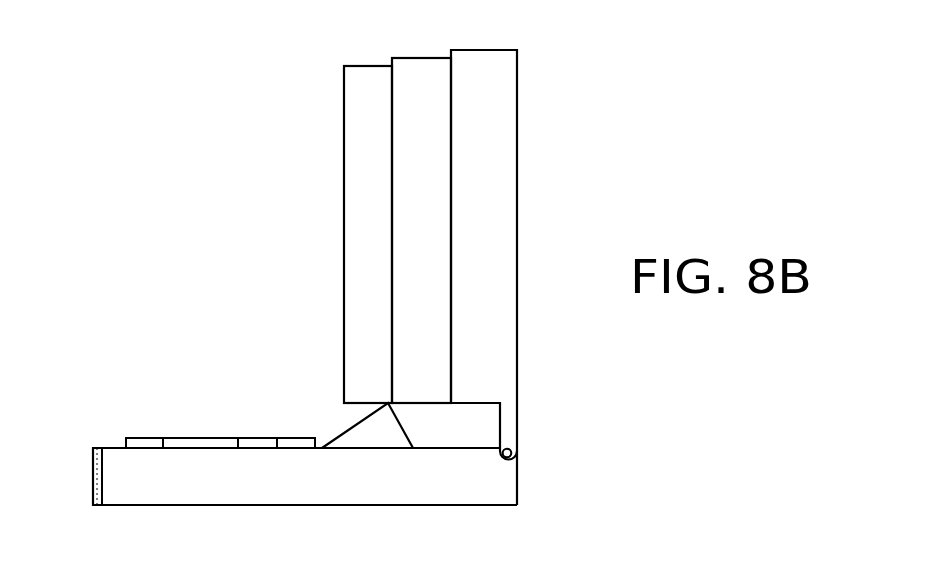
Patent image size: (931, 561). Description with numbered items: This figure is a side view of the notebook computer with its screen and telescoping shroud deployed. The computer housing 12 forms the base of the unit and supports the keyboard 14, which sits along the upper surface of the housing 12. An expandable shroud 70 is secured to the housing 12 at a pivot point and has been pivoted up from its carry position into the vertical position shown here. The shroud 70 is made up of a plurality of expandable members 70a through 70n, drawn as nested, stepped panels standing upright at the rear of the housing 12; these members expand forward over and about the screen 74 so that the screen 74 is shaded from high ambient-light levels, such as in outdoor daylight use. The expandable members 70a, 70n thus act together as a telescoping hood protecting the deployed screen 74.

The housing 12 is at (274, 470).
The keyboard 14 is at (206, 420).
The expandable shroud 70 is at (433, 277).
The expandable member 70a is at (534, 277).
The expandable member 70n is at (320, 234).
The screen 74 is at (578, 184).